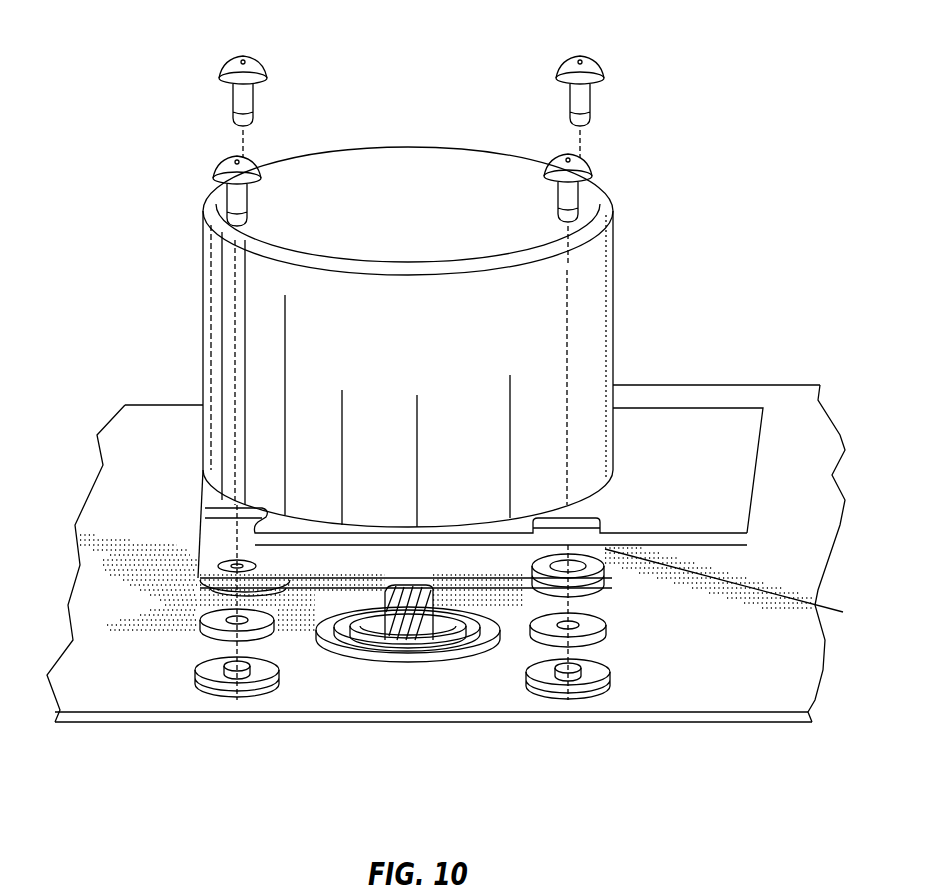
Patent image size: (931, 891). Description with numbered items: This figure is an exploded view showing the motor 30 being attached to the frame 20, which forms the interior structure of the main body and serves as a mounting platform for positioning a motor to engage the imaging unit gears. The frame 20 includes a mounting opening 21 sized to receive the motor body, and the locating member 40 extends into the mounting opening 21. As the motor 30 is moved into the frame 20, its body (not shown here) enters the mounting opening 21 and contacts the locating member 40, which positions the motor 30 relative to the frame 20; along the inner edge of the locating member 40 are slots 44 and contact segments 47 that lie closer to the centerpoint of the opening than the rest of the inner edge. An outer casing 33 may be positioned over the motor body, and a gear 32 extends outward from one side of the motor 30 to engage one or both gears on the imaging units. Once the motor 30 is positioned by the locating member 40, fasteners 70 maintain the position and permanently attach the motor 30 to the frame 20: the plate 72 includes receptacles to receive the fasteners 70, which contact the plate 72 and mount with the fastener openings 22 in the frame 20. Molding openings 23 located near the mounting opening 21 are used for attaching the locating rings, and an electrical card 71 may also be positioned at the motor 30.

The frame 20 is at (787, 686).
The mounting opening 21 is at (447, 642).
The fastener openings 22 is at (200, 580).
The molding openings 23 is at (403, 662).
The motor 30 is at (160, 243).
The gear 32 is at (398, 640).
The outer casing 33 is at (582, 321).
The locating member 40 is at (368, 632).
The slots 44 is at (255, 601).
The contact segments 47 is at (345, 640).
The fasteners 70 is at (228, 165).
The electrical card 71 is at (718, 428).
The plate 72 is at (739, 586).